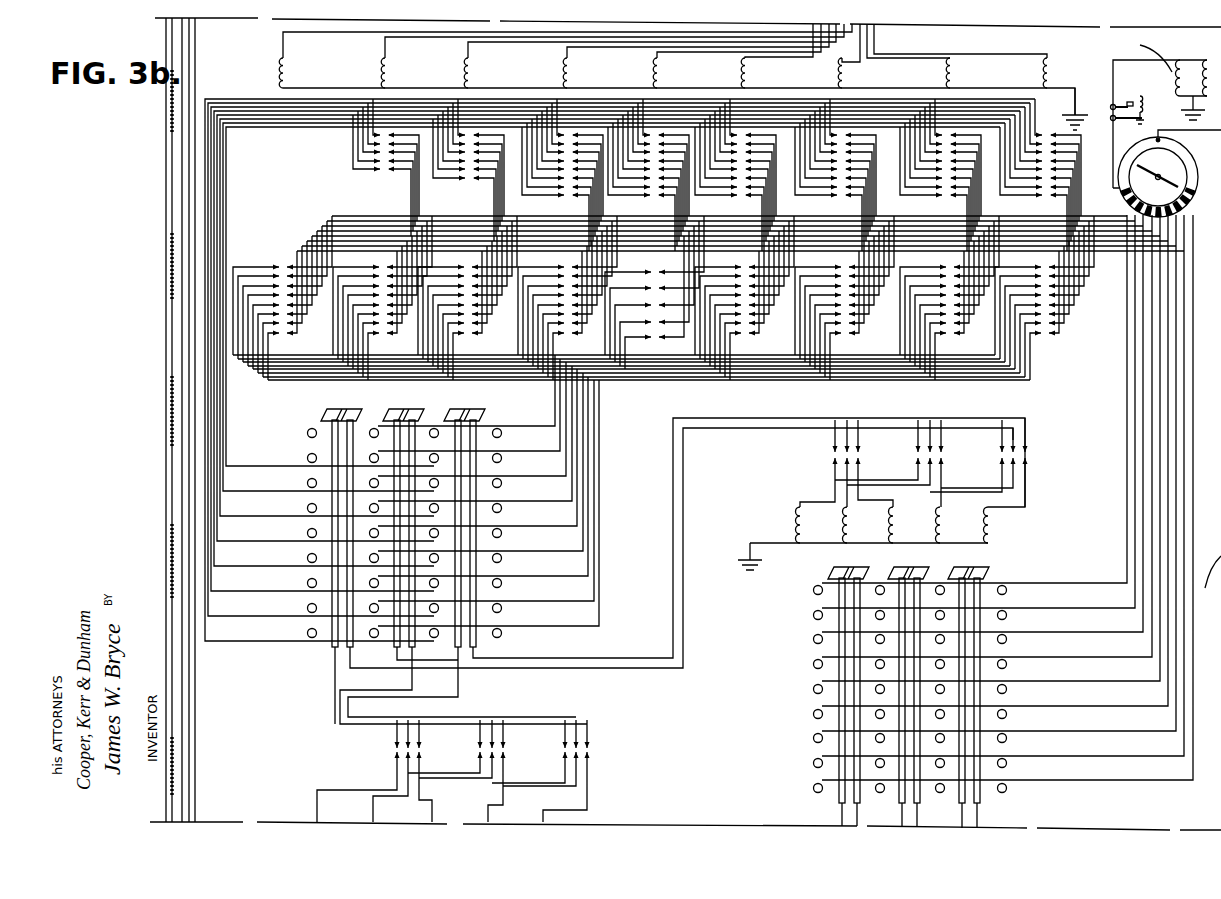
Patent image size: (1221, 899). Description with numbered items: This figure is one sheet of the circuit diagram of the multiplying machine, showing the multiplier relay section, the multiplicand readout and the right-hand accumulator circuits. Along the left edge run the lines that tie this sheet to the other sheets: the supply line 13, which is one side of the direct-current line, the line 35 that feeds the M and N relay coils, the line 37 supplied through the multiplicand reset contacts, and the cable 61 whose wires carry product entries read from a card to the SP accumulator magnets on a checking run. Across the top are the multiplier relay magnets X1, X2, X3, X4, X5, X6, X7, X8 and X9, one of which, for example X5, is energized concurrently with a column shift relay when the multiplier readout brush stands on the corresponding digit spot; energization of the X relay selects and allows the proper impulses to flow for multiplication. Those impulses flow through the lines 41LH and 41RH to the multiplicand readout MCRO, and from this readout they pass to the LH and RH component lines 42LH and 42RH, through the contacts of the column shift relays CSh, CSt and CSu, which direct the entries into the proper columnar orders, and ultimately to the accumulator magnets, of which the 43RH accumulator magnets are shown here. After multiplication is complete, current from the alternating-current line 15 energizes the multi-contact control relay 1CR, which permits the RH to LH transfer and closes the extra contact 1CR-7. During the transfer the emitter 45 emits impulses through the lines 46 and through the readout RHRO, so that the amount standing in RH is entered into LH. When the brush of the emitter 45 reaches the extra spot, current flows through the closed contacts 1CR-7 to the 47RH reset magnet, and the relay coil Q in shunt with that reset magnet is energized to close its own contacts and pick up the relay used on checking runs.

The D. C. line side 13 is at (200, 27).
The line 35 is at (188, 90).
The cable 61 is at (166, 385).
The line 37 is at (185, 478).
The multiplier relay magnet X1 is at (542, 202).
The multiplier relay magnet X2 is at (588, 202).
The multiplier relay magnet X3 is at (627, 202).
The multiplier relay magnet X4 is at (673, 202).
The multiplier relay magnet X5 is at (713, 196).
The multiplier relay magnet X6 is at (754, 202).
The multiplier relay magnet X7 is at (844, 202).
The multiplier relay magnet X8 is at (933, 202).
The multiplier relay magnet X9 is at (984, 202).
The LH lines 41LH is at (218, 421).
The RH lines 41RH is at (600, 416).
The LH component lines 42LH is at (335, 710).
The RH component lines 42RH is at (684, 622).
The RH accumulator magnets 43RH is at (990, 530).
The emitter 45 is at (1175, 170).
The lines 46 is at (1140, 483).
The RH reset magnet 47RH is at (1214, 62).
The relay coil Q is at (1150, 53).
The multi-contact control relay 1CR is at (1152, 98).
The contact 1CR-7 is at (1102, 103).
The A. C. line side 15 is at (1207, 581).
The hundreds column shift relay CSh is at (416, 704).
The tens column shift relay CSt is at (499, 704).
The units column shift relay CSu is at (583, 704).
The multiplicand readout MCRO is at (384, 542).
The RH readout RHRO is at (875, 697).